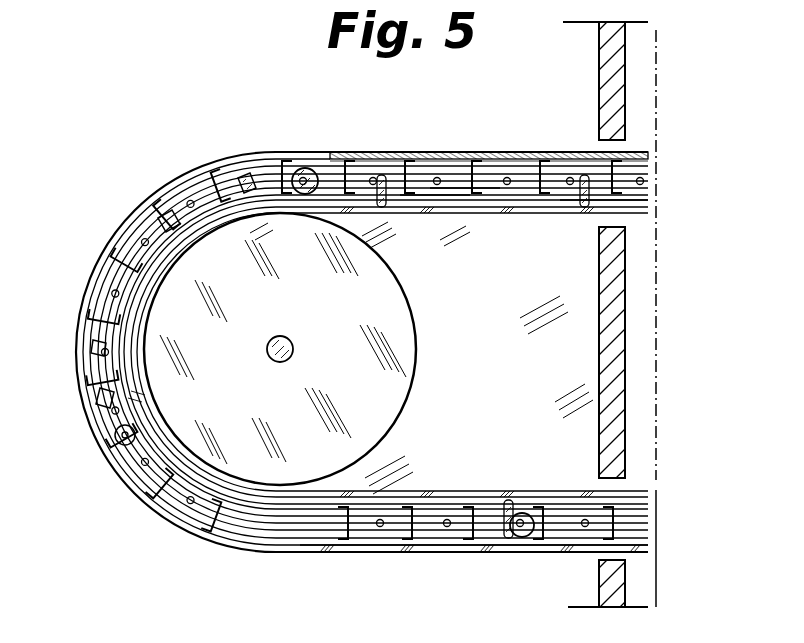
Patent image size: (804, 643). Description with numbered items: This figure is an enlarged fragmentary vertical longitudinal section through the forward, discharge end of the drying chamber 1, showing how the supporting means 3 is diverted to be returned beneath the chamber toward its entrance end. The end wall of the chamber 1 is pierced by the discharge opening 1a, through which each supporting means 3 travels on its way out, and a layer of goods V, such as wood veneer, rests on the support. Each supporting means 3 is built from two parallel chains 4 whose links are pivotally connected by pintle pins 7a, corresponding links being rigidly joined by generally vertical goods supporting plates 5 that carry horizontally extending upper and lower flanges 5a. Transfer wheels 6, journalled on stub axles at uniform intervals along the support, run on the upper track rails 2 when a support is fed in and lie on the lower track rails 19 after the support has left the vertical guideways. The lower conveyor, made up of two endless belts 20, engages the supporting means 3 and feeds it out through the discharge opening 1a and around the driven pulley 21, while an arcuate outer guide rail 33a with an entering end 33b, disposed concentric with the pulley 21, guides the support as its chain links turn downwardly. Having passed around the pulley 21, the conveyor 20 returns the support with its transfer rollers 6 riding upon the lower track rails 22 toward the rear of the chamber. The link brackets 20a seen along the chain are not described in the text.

The drying chamber 1 is at (605, 77).
The discharge opening 1a is at (612, 149).
The upper track rails 2 is at (629, 196).
The carrier supports (supporting means) 3 is at (426, 204).
The chains 4 is at (455, 190).
The goods supporting plates 5 is at (504, 158).
The flanges 5a is at (541, 195).
The transfer wheels 6 is at (308, 168).
The pintle pins 7a is at (378, 528).
The lower track rails 19 is at (601, 198).
The endless belts (lower conveyor) 20 is at (512, 210).
The chain link bracket 20a is at (382, 175).
The driven pulley 21 is at (405, 358).
The lower track rails 22 is at (462, 550).
The arcuate outer guide rail 33a is at (95, 392).
The entering end 33b is at (262, 160).
The web-like material (goods) V is at (636, 158).